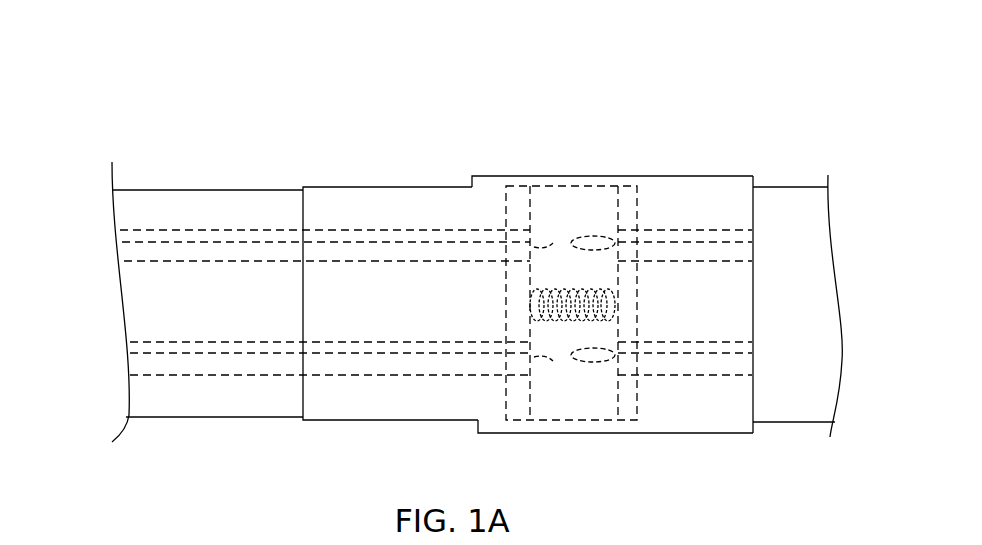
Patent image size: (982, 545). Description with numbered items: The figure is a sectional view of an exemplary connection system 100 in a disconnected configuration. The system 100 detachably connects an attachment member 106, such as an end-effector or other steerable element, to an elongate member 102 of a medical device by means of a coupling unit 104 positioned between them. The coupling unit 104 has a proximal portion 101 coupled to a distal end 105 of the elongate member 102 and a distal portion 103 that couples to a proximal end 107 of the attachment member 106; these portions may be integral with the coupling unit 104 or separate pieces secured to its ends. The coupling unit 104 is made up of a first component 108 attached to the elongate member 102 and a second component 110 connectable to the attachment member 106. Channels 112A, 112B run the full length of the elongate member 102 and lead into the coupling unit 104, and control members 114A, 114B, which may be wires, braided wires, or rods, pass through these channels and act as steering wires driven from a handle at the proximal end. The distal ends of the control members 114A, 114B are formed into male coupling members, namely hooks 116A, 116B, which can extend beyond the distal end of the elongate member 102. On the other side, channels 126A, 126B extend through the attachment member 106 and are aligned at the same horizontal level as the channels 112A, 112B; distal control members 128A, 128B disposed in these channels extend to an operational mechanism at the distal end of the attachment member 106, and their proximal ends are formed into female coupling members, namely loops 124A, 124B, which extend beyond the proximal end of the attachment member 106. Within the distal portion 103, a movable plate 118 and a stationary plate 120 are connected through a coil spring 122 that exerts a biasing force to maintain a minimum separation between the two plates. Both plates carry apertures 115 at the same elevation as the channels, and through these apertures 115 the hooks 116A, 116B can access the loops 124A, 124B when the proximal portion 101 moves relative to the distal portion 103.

The connection system 100 is at (197, 68).
The proximal portion 101 is at (310, 186).
The elongate member 102 is at (212, 188).
The distal portion 103 is at (743, 176).
The coupling unit 104 is at (497, 156).
The distal end 105 is at (282, 418).
The attachment member 106 is at (803, 185).
The proximal end 107 is at (778, 424).
The first component 108 is at (450, 183).
The second component 110 is at (529, 172).
The channel 112A is at (131, 252).
The channel 112B is at (145, 365).
The control member 114A is at (142, 234).
The control member 114B is at (145, 346).
The apertures 115 is at (506, 250).
The hook 116A is at (549, 240).
The hook 116B is at (551, 364).
The movable plate 118 is at (513, 395).
The stationary plate 120 is at (636, 393).
The coil spring 122 is at (600, 288).
The loop 124A is at (590, 234).
The loop 124B is at (575, 364).
The channel 126A is at (722, 232).
The channel 126B is at (702, 374).
The distal control member 128A is at (702, 240).
The distal control member 128B is at (656, 356).